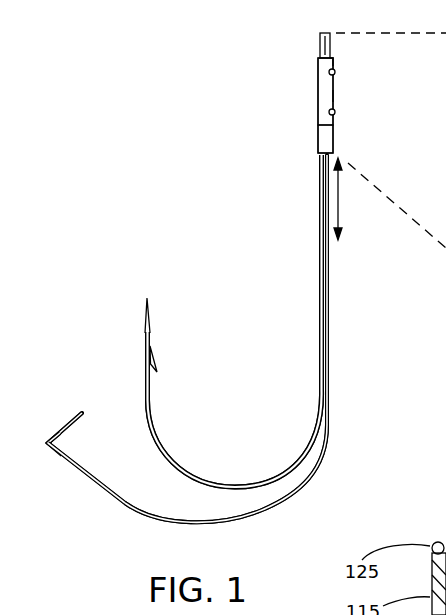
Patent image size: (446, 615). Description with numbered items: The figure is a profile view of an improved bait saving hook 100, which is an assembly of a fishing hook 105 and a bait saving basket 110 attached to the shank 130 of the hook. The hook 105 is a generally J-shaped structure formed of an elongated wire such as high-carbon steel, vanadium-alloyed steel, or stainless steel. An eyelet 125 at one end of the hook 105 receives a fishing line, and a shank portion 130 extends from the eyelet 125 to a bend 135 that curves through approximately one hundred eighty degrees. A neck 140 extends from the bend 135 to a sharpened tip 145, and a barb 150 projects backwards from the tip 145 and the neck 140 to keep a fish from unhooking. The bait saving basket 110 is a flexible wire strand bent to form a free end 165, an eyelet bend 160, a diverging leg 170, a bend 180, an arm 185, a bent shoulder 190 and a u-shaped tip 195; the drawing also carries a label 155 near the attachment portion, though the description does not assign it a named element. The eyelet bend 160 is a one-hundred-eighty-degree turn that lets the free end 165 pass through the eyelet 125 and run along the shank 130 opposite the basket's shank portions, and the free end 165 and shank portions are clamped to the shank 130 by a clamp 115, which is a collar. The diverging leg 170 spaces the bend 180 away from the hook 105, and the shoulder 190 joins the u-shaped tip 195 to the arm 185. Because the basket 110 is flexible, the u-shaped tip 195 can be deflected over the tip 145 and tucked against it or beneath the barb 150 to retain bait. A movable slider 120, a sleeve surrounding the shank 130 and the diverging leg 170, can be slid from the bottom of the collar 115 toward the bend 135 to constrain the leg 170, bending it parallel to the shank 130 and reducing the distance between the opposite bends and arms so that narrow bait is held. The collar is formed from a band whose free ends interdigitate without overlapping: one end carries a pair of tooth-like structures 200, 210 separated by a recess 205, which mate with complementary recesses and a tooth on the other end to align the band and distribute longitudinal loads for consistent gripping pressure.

The bait saving hook 100 is at (213, 245).
The fishing hook 105 is at (250, 321).
The bait saving basket 110 is at (219, 358).
The clamp 115 is at (308, 107).
The movable slider 120 is at (320, 139).
The eyelet 125 is at (318, 35).
The shank 130 is at (327, 310).
The bend 135 is at (230, 486).
The neck 140 is at (151, 398).
The sharpened tip 145 is at (149, 302).
The barb 150 is at (154, 360).
The upper sleeve portion 155 is at (320, 62).
The eyelet bend 160 is at (333, 45).
The free end 165 is at (334, 63).
The diverging leg 170 is at (320, 272).
The bend 180 is at (232, 519).
The arm 185 is at (93, 490).
The bent shoulder 190 is at (47, 443).
The u-shaped tip 195 is at (78, 412).
The tooth-like structure 200 is at (335, 72).
The recess 205 is at (334, 96).
The tooth-like structure 210 is at (335, 112).